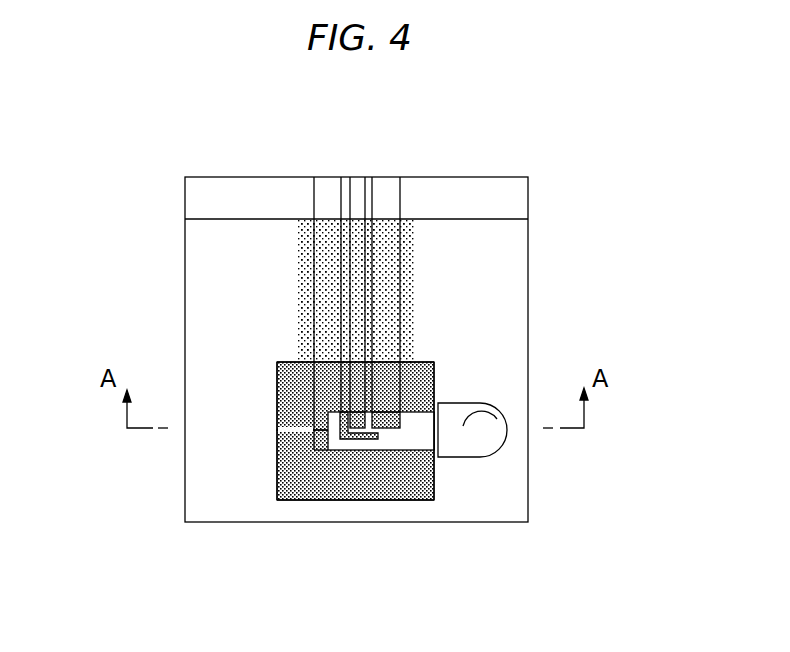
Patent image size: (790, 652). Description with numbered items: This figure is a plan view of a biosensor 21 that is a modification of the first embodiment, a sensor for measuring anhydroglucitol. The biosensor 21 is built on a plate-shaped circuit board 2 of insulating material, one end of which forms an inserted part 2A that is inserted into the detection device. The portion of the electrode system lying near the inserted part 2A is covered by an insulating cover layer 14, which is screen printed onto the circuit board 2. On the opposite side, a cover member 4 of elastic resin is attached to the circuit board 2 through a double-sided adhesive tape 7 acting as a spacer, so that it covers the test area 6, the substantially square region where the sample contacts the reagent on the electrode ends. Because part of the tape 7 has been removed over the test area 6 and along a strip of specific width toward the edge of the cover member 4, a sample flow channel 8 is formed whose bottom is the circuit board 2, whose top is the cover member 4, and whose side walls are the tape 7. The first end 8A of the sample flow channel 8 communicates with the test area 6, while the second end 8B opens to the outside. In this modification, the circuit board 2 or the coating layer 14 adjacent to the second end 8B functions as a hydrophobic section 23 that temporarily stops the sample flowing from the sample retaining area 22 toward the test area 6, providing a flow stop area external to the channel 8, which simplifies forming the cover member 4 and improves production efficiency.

The biosensor 21 is at (369, 364).
The circuit board 2 is at (513, 282).
The inserted part 2A is at (458, 188).
The cover layer 14 is at (298, 285).
The double-sided adhesive tape 7 is at (276, 475).
The cover member 4 is at (308, 491).
The sample flow channel 8 is at (407, 436).
The test area 6 is at (354, 457).
The first end 8A is at (383, 412).
The second end 8B is at (430, 432).
The hydrophobic section 23 is at (438, 403).
The sample retaining area 22 is at (482, 435).